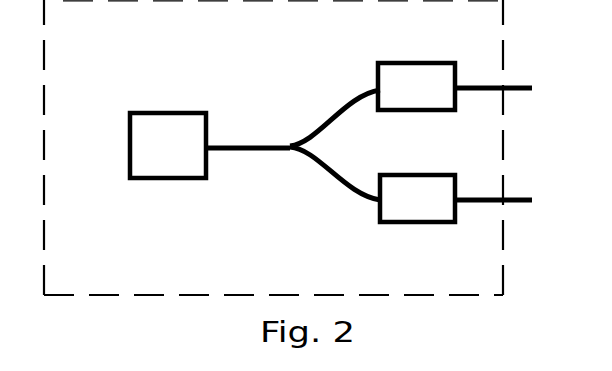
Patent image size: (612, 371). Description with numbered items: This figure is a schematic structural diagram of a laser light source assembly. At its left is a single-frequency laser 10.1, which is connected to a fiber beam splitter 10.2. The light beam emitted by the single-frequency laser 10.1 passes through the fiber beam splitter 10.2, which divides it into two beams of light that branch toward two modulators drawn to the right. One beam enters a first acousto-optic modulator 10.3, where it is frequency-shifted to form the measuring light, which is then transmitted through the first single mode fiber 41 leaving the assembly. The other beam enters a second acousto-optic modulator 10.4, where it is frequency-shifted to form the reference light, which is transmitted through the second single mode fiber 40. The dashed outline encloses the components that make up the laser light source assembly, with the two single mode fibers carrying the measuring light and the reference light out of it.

The single-frequency laser 10.1 is at (170, 113).
The fiber beam splitter 10.2 is at (292, 143).
The first acousto-optic modulator 10.3 is at (413, 62).
The second acousto-optic modulator 10.4 is at (418, 222).
The first single mode fiber 41 is at (520, 86).
The second single mode fiber 40 is at (520, 202).